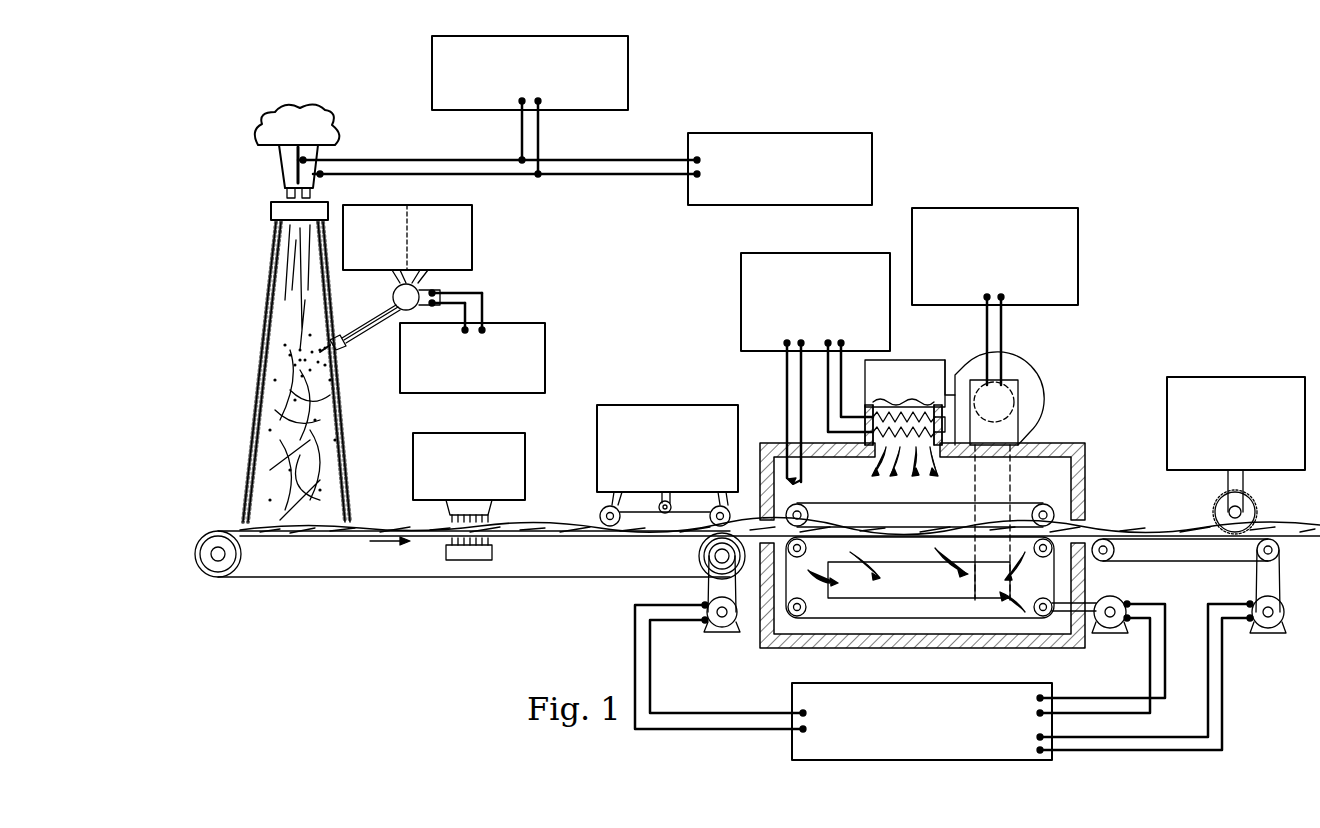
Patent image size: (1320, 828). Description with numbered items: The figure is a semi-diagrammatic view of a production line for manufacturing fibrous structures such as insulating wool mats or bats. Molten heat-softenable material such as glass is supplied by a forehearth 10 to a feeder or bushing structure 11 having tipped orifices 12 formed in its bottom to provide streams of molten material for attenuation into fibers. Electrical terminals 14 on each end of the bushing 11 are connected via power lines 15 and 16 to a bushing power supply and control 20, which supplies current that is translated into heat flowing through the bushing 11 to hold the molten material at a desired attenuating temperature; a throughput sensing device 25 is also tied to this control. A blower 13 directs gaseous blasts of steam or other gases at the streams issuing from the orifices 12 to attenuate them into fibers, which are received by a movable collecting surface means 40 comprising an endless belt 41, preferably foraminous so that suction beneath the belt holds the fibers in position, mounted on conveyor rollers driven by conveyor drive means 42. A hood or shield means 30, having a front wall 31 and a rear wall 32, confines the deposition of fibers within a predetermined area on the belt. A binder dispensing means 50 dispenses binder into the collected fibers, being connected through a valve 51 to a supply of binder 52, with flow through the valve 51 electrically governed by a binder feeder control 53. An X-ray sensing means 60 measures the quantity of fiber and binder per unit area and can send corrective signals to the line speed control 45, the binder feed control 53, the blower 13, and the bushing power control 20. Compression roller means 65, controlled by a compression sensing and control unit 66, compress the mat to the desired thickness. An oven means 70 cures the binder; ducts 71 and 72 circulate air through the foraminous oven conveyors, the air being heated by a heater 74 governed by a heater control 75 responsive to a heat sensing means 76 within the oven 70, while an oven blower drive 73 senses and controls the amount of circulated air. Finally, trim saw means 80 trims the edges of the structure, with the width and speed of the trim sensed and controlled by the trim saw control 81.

The forehearth 10 is at (296, 130).
The feeder or bushing structure 11 is at (285, 165).
The tipped orifices 12 is at (286, 193).
The blower 13 is at (270, 212).
The electrical terminals 14 is at (297, 158).
The power line 15 is at (484, 156).
The power line 16 is at (482, 182).
The bushing power supply and control 20 is at (612, 30).
The throughput sensing device 25 is at (814, 124).
The hood or shield means 30 is at (290, 372).
The front wall 31 is at (336, 410).
The rear wall 32 is at (262, 396).
The movable collecting surface means 40 is at (494, 611).
The endless belt 41 is at (280, 536).
The conveyor drive means 42 is at (712, 635).
The line speed control 45 is at (953, 680).
The binder dispensing means 50 is at (336, 350).
The valve 51 is at (393, 292).
The supply of binder 52 is at (437, 201).
The binder feeder control 53 is at (503, 323).
The X-ray sensing means 60 is at (494, 430).
The compression roller means 65 is at (660, 520).
The compression sensing and control unit 66 is at (690, 400).
The oven means 70 is at (901, 560).
The duct 71 is at (1018, 368).
The duct 72 is at (918, 595).
The oven blower drive 73 is at (1018, 202).
The heater 74 is at (918, 405).
The heater control 75 is at (834, 248).
The heat sensing means 76 is at (800, 484).
The trim saw means 80 is at (1216, 502).
The trim saw control 81 is at (1260, 376).